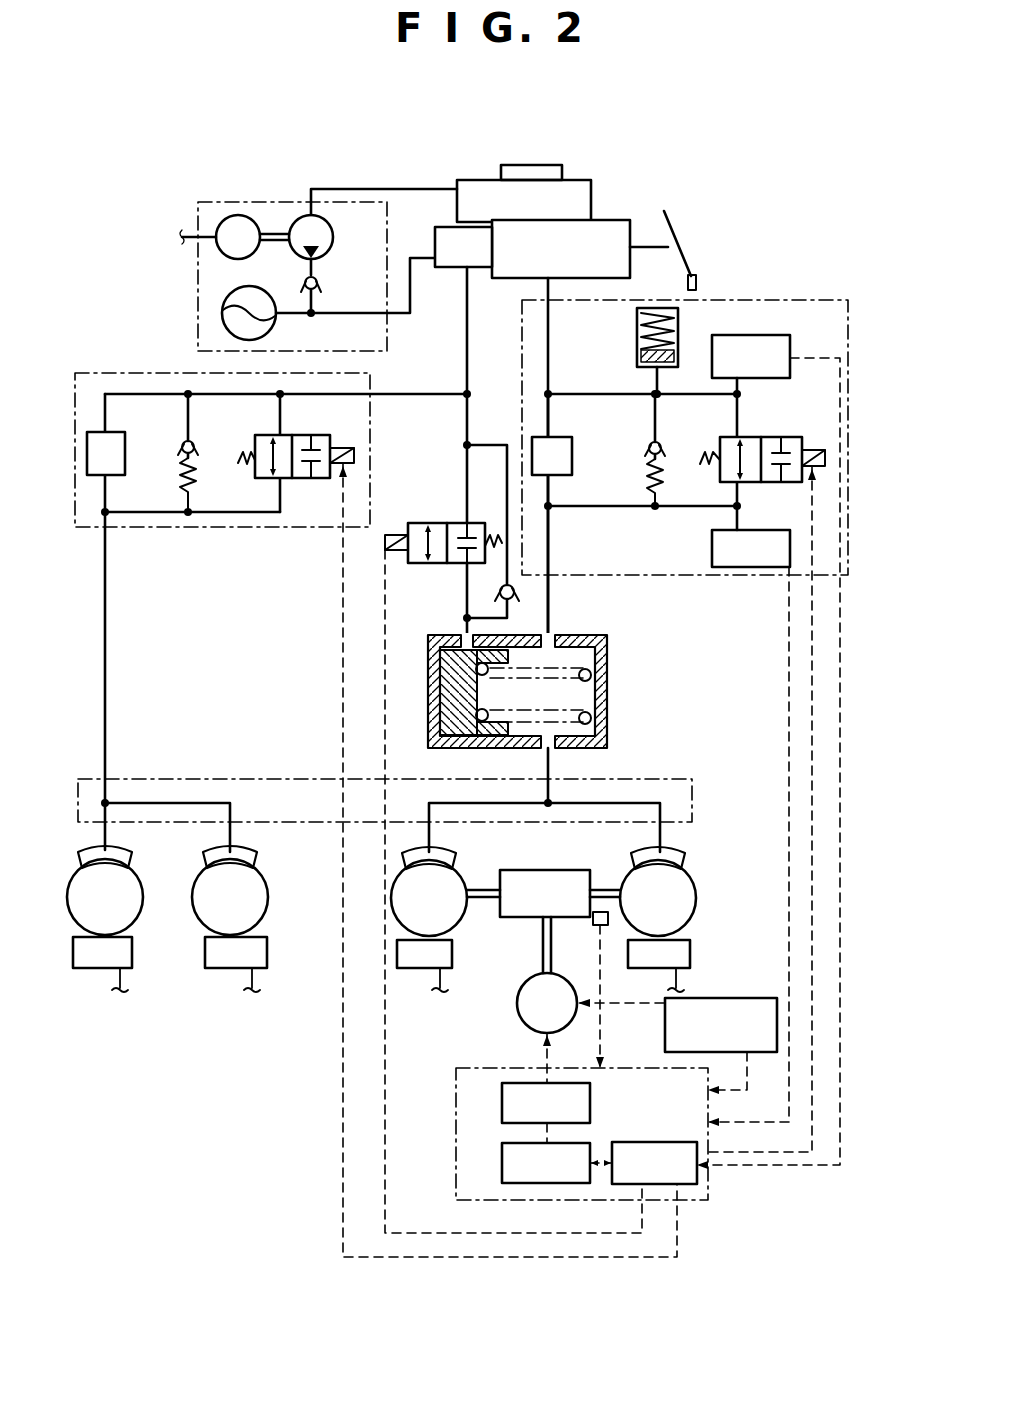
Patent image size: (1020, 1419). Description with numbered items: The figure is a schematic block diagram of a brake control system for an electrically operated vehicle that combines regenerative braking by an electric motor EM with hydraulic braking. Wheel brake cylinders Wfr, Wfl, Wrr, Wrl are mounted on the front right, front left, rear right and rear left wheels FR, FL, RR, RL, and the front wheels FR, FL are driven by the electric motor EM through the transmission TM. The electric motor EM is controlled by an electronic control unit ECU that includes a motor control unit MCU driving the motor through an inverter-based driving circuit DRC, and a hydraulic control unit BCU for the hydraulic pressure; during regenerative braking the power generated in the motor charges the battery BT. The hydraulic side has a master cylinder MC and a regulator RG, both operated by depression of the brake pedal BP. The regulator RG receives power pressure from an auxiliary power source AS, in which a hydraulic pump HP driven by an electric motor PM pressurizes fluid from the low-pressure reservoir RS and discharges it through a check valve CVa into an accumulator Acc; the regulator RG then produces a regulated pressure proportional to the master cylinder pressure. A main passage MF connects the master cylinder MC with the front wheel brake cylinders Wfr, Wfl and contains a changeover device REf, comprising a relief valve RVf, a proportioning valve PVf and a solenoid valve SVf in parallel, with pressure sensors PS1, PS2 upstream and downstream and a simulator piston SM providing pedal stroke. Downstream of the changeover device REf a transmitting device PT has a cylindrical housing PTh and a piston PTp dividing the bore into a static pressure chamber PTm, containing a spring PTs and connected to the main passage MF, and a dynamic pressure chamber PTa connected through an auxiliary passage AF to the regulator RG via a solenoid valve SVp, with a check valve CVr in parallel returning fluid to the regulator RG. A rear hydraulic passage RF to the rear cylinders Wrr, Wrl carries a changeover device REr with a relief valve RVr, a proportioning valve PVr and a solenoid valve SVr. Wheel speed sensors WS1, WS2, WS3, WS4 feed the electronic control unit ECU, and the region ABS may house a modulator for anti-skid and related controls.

The auxiliary power source AS is at (214, 204).
The electric motor PM is at (234, 237).
The hydraulic pump HP is at (330, 224).
The check valve CVa is at (326, 279).
The accumulator Acc is at (230, 294).
The low-pressure reservoir RS is at (524, 193).
The regulator RG is at (463, 432).
The master cylinder MC is at (580, 428).
The brake pedal BP is at (676, 236).
The changeover device REr is at (128, 373).
The changeover device REf is at (772, 300).
The hydraulic passage RF is at (396, 393).
The main passage MF is at (550, 607).
The proportioning valve PVr is at (114, 432).
The relief valve RVr is at (196, 442).
The solenoid valve SVr is at (296, 436).
The proportioning valve PVf is at (556, 437).
The relief valve RVf is at (662, 442).
The solenoid valve SVf is at (756, 437).
The simulator piston SM is at (638, 344).
The pressure sensor PS1 is at (768, 752).
The pressure sensor PS2 is at (749, 814).
The auxiliary passage AF is at (462, 470).
The solenoid valve SVp is at (436, 522).
The check valve CVr is at (494, 592).
The transmitting device PT is at (598, 644).
The dynamic pressure chamber PTa is at (452, 652).
The cylindrical housing PTh is at (600, 660).
The static pressure chamber PTm is at (575, 697).
The spring PTs is at (572, 720).
The piston PTp is at (456, 690).
The region ABS is at (605, 784).
The wheel brake cylinder Wrl is at (114, 856).
The wheel brake cylinder Wrr is at (244, 856).
The wheel brake cylinder Wfl is at (442, 856).
The wheel brake cylinder Wfr is at (672, 856).
The wheel RL is at (105, 897).
The wheel RR is at (230, 897).
The wheel FL is at (445, 898).
The wheel FR is at (643, 898).
The wheel speed sensor WS1 is at (659, 966).
The wheel speed sensor WS2 is at (424, 966).
The wheel speed sensor WS3 is at (236, 964).
The wheel speed sensor WS4 is at (102, 964).
The transmission TM is at (554, 969).
The electric motor EM is at (591, 1028).
The battery BT is at (732, 997).
The electronic control unit ECU is at (512, 1068).
The driving circuit DRC is at (546, 1113).
The motor control unit MCU is at (557, 1163).
The hydraulic control unit BCU is at (654, 1163).